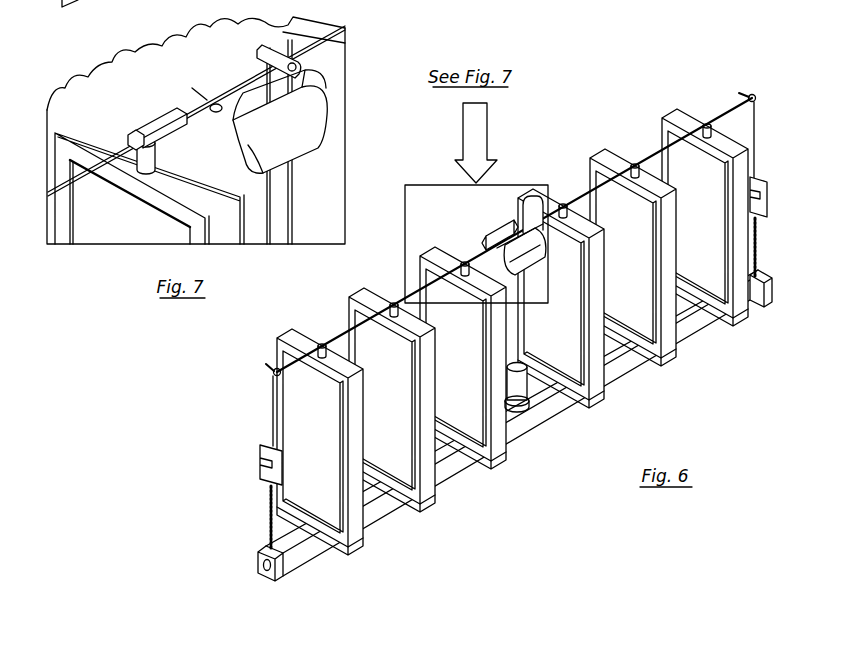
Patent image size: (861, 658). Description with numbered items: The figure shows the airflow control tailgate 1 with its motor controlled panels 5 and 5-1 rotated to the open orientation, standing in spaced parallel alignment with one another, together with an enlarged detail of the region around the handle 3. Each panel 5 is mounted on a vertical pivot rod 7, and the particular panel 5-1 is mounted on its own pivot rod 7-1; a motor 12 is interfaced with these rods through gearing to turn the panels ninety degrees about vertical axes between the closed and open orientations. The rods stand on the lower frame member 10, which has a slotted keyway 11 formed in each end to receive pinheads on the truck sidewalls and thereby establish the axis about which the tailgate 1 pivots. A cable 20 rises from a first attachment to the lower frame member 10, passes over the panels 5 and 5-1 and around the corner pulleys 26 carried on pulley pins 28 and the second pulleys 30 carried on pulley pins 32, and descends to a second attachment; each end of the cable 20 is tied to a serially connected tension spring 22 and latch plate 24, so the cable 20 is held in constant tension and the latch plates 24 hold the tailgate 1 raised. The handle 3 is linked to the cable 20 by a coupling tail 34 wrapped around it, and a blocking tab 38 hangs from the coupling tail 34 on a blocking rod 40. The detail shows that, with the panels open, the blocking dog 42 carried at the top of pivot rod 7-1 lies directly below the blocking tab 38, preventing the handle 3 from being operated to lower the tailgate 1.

In FIG. 6, the airflow control tailgate 1 is at (252, 404).
In FIG. 6, the handle 3 is at (530, 250).
In FIG. 7, the handle 3 is at (310, 140).
In FIG. 6, the motor controlled panel 5 is at (360, 503).
In FIG. 7, the motor controlled panel 5 is at (337, 97).
In FIG. 7, the motor controlled panel 5-1 is at (130, 230).
In FIG. 6, the pivot rod 7 is at (319, 345).
In FIG. 7, the pivot rod 7-1 is at (142, 167).
In FIG. 6, the lower frame member 10 is at (627, 372).
In FIG. 6, the slotted keyway 11 is at (262, 565).
In FIG. 7, the slotted keyway 11 is at (60, 3).
In FIG. 6, the motor 12 is at (523, 397).
In FIG. 6, the cable 20 is at (326, 334).
In FIG. 7, the cable 20 is at (110, 155).
In FIG. 6, the tension spring 22 is at (268, 515).
In FIG. 6, the latch plate 24 is at (260, 462).
In FIG. 6, the corner pulley 26 is at (273, 373).
In FIG. 6, the pulley pin 28 is at (268, 363).
In FIG. 6, the pulley 30 is at (497, 252).
In FIG. 6, the pulley pin 32 is at (486, 234).
In FIG. 6, the coupling tail 34 is at (504, 230).
In FIG. 7, the coupling tail 34 is at (247, 57).
In FIG. 7, the blocking tab 38 is at (173, 110).
In FIG. 7, the blocking rod 40 is at (200, 123).
In FIG. 7, the blocking dog 42 is at (133, 128).